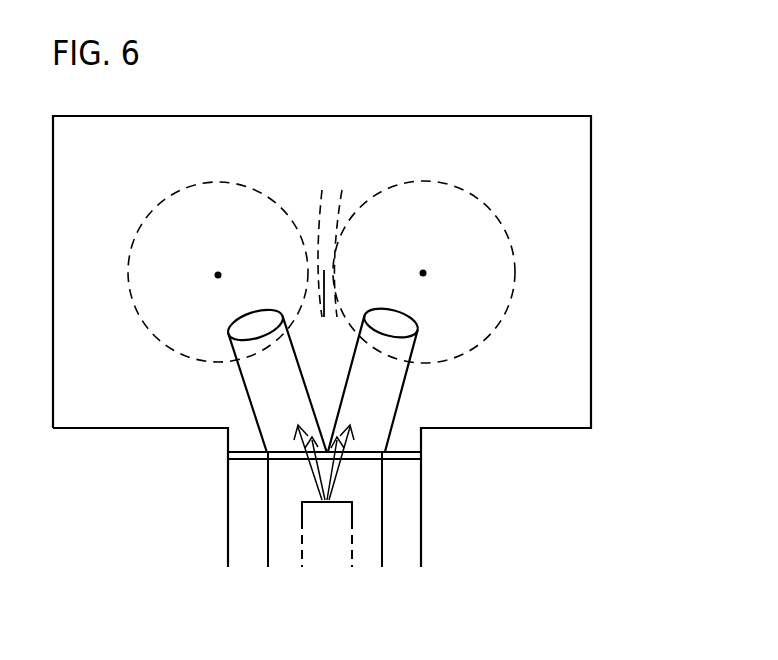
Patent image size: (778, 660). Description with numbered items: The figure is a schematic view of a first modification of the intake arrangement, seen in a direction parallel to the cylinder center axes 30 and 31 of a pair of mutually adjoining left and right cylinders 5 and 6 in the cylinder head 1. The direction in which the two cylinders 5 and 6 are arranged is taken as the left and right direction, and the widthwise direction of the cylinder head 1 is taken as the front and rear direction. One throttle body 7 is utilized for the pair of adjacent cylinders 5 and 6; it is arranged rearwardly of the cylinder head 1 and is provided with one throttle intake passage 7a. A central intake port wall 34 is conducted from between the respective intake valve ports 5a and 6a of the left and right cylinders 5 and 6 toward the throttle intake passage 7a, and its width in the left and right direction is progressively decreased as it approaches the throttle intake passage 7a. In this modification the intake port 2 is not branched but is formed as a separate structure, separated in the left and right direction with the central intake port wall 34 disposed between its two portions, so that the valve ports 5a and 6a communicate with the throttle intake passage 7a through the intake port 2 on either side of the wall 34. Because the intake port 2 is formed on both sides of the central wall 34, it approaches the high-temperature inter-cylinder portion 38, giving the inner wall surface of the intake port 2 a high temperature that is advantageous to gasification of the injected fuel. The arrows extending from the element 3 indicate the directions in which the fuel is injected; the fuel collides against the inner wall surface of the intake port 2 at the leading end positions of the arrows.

The cylinder head 1 is at (607, 263).
The intake port 2 is at (346, 352).
The substrate 3 is at (320, 558).
The left cylinder 5 is at (185, 222).
The intake valve port 5a is at (260, 320).
The right cylinder 6 is at (457, 228).
The intake valve port 6a is at (402, 323).
The throttle body 7 is at (438, 508).
The throttle intake passage 7a is at (363, 543).
The cylinder center axis 30 is at (218, 275).
The cylinder center axis 31 is at (423, 273).
The central intake port wall 34 is at (327, 365).
The inter-cylinder portion 38 is at (325, 228).